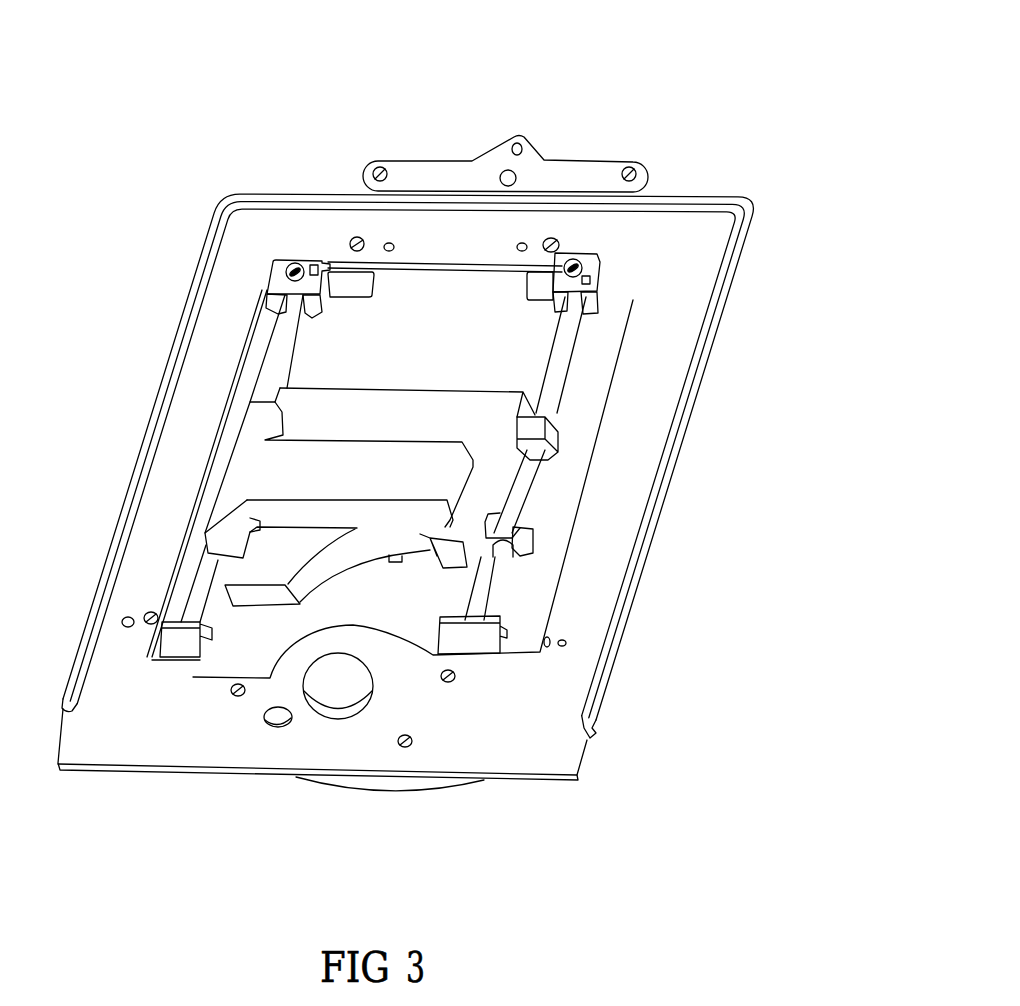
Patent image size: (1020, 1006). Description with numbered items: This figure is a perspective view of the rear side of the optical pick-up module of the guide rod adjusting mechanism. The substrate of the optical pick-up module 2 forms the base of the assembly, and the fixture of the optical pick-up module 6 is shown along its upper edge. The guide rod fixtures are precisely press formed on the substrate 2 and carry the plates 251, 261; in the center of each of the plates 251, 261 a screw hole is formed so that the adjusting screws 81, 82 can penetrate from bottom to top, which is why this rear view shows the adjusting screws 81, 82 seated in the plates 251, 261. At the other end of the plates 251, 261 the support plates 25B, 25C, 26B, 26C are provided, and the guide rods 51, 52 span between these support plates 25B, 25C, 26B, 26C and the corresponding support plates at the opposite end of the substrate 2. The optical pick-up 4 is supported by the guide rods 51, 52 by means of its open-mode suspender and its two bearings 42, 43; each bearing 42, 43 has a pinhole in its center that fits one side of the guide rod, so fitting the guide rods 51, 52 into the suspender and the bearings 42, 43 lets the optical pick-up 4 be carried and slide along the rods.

The substrate of the optical pick-up module 2 is at (650, 466).
The optical pick-up 4 is at (485, 440).
The fixture of the optical pick-up module 6 is at (455, 178).
The bearing 42 is at (552, 438).
The bearing 43 is at (507, 546).
The guide rod 51 is at (270, 360).
The guide rod 52 is at (573, 355).
The adjusting screw 81 is at (295, 263).
The adjusting screw 82 is at (575, 262).
The support plate 25B is at (600, 303).
The support plate 25C is at (555, 313).
The support plate 26B is at (320, 312).
The support plate 26C is at (280, 306).
The plate 251 is at (582, 275).
The plate 261 is at (313, 270).